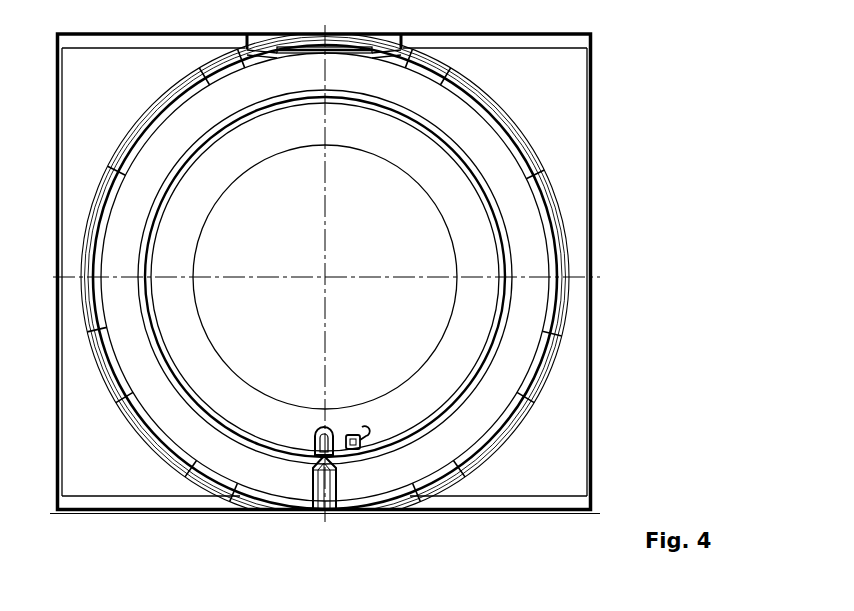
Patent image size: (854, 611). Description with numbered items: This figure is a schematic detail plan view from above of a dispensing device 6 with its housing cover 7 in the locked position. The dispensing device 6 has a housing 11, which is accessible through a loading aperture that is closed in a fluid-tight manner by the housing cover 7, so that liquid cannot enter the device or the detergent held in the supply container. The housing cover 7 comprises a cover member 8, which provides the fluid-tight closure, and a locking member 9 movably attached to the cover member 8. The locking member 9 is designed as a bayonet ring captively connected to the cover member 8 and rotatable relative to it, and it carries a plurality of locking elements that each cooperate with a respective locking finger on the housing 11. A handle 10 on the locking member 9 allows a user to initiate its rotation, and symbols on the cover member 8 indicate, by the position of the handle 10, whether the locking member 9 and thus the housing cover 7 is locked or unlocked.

The dispensing device 6 is at (636, 73).
The housing cover 7 is at (480, 251).
The cover member 8 is at (415, 338).
The locking member 9 is at (478, 419).
The handle 10 is at (340, 506).
The housing 11 is at (570, 141).